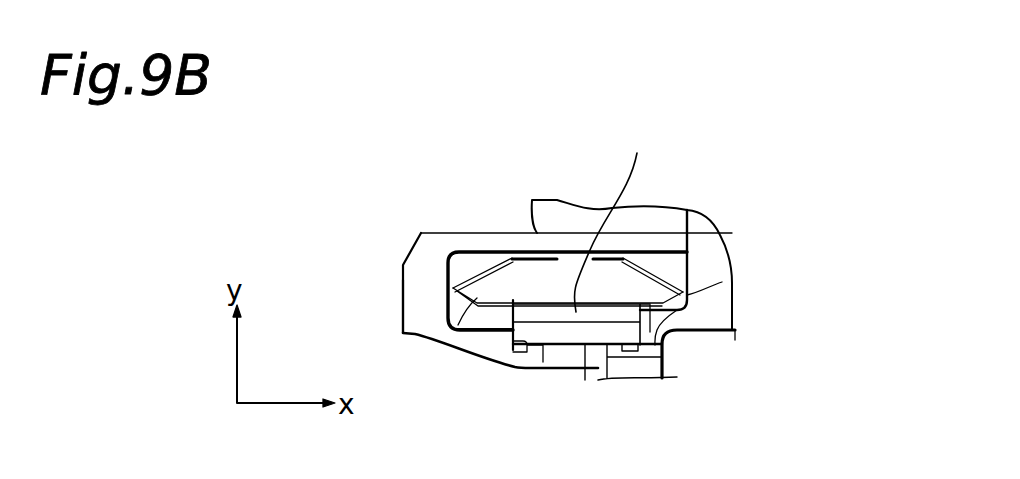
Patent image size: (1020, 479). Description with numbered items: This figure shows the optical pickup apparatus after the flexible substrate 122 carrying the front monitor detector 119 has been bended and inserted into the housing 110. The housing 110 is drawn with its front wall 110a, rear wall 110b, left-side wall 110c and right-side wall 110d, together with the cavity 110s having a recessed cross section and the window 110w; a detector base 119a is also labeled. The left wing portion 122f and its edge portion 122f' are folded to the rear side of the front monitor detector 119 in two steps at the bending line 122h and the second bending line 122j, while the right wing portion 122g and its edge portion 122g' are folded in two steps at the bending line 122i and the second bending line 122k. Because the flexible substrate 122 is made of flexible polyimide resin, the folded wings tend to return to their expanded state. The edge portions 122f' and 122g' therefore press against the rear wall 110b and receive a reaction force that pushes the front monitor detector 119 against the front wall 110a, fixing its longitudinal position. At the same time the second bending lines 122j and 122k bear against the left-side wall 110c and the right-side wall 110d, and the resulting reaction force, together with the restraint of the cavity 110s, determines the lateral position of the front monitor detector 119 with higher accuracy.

The housing 110 is at (427, 258).
The front wall 110a is at (512, 366).
The rear wall 110b is at (575, 248).
The left-side wall 110c is at (413, 299).
The right-side wall 110d is at (720, 288).
The cavity 110s is at (512, 336).
The window 110w is at (572, 357).
The front monitor detector 119 is at (623, 216).
The lever base 119a is at (585, 346).
The flexible substrate 122 is at (667, 343).
The left wing portion 122f is at (377, 322).
The left wing edge portion 122f' is at (459, 227).
The right wing portion 122g is at (752, 314).
The right wing edge portion 122g' is at (699, 222).
The bending line 122h is at (450, 329).
The bending line 122i is at (698, 331).
The second bending line 122j is at (445, 288).
The second bending line 122k is at (725, 278).